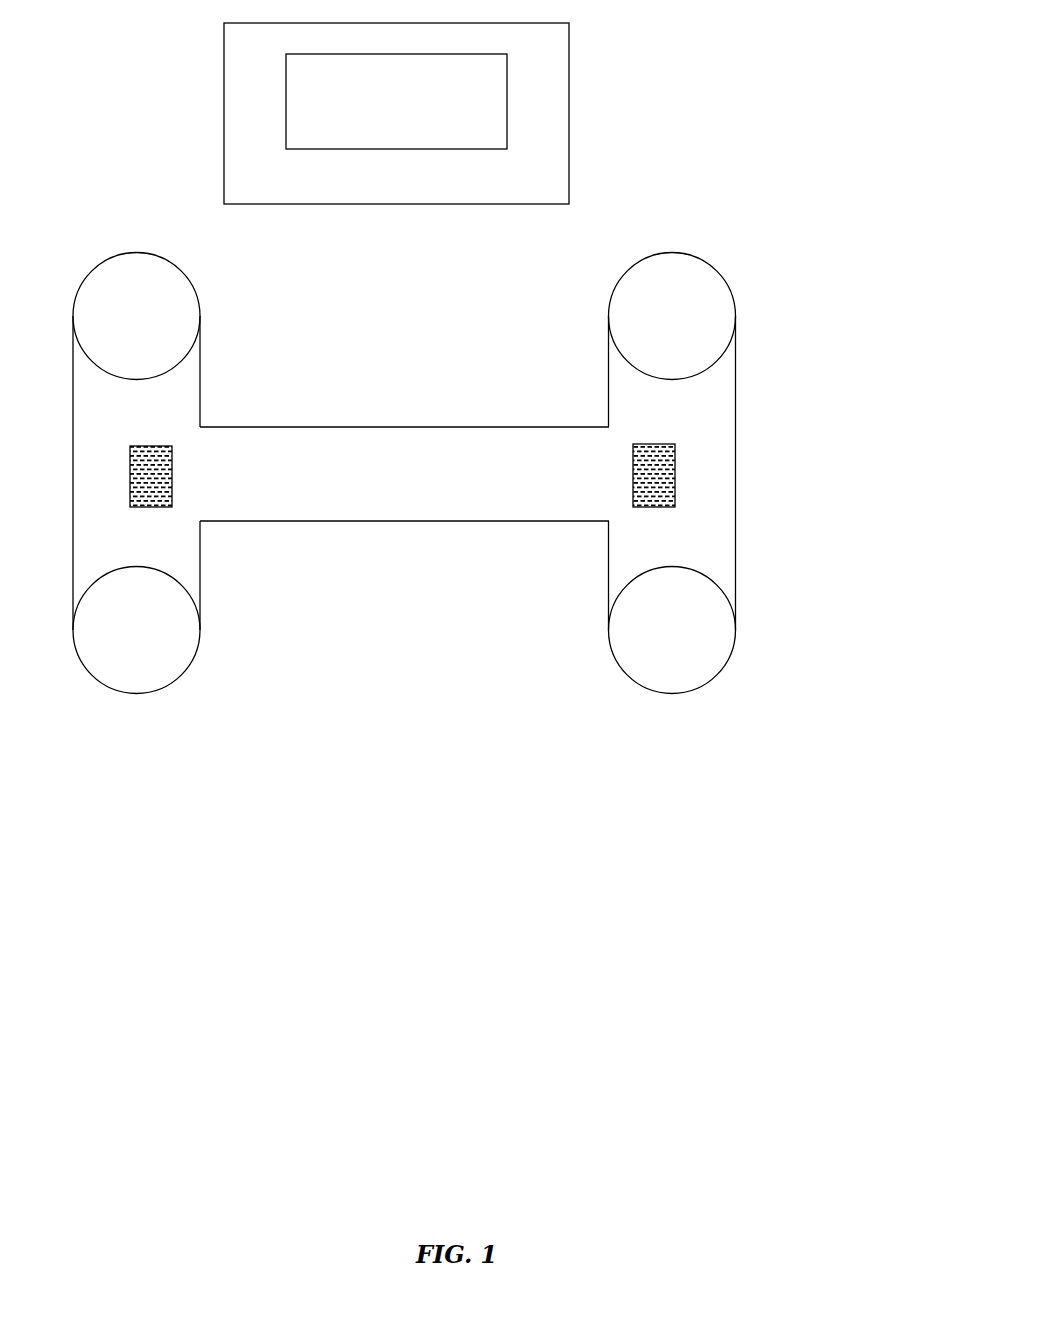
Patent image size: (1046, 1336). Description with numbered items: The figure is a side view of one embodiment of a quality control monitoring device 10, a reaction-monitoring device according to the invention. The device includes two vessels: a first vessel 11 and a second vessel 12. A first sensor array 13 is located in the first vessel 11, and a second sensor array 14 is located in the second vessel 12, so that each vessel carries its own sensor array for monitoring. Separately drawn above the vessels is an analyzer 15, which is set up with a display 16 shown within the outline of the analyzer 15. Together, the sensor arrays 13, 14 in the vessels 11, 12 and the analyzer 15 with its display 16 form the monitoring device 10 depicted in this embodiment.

The quality control monitoring device 10 is at (855, 100).
The first vessel 11 is at (728, 491).
The second vessel 12 is at (83, 493).
The first sensor array 13 is at (633, 475).
The second sensor array 14 is at (172, 478).
The analyzer 15 is at (569, 129).
The display 16 is at (294, 129).